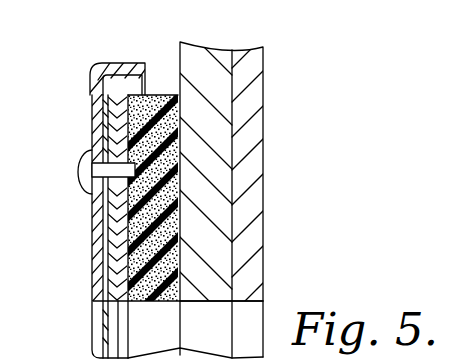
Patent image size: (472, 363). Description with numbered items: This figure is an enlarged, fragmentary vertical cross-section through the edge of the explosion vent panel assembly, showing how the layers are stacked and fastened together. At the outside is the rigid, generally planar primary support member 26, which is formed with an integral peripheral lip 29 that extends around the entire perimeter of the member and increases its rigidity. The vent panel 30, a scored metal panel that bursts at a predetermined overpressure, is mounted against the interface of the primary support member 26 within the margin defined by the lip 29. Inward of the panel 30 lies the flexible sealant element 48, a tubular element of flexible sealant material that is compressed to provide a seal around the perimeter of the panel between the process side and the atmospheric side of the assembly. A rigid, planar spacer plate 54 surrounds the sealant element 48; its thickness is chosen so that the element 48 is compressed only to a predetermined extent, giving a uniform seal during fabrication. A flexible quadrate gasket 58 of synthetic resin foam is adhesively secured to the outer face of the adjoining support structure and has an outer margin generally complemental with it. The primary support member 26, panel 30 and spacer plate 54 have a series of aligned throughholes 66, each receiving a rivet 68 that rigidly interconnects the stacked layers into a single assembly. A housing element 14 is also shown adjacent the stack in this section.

The housing / bore member 14 is at (246, 108).
The primary support member 26 is at (98, 228).
The peripheral lip 29 is at (125, 62).
The vent panel 30 is at (104, 344).
The flexible sealant element 48 is at (107, 270).
The spacer plate 54 is at (100, 114).
The gasket 58 is at (180, 200).
The throughholes 66 is at (98, 148).
The rivet 68 is at (102, 172).